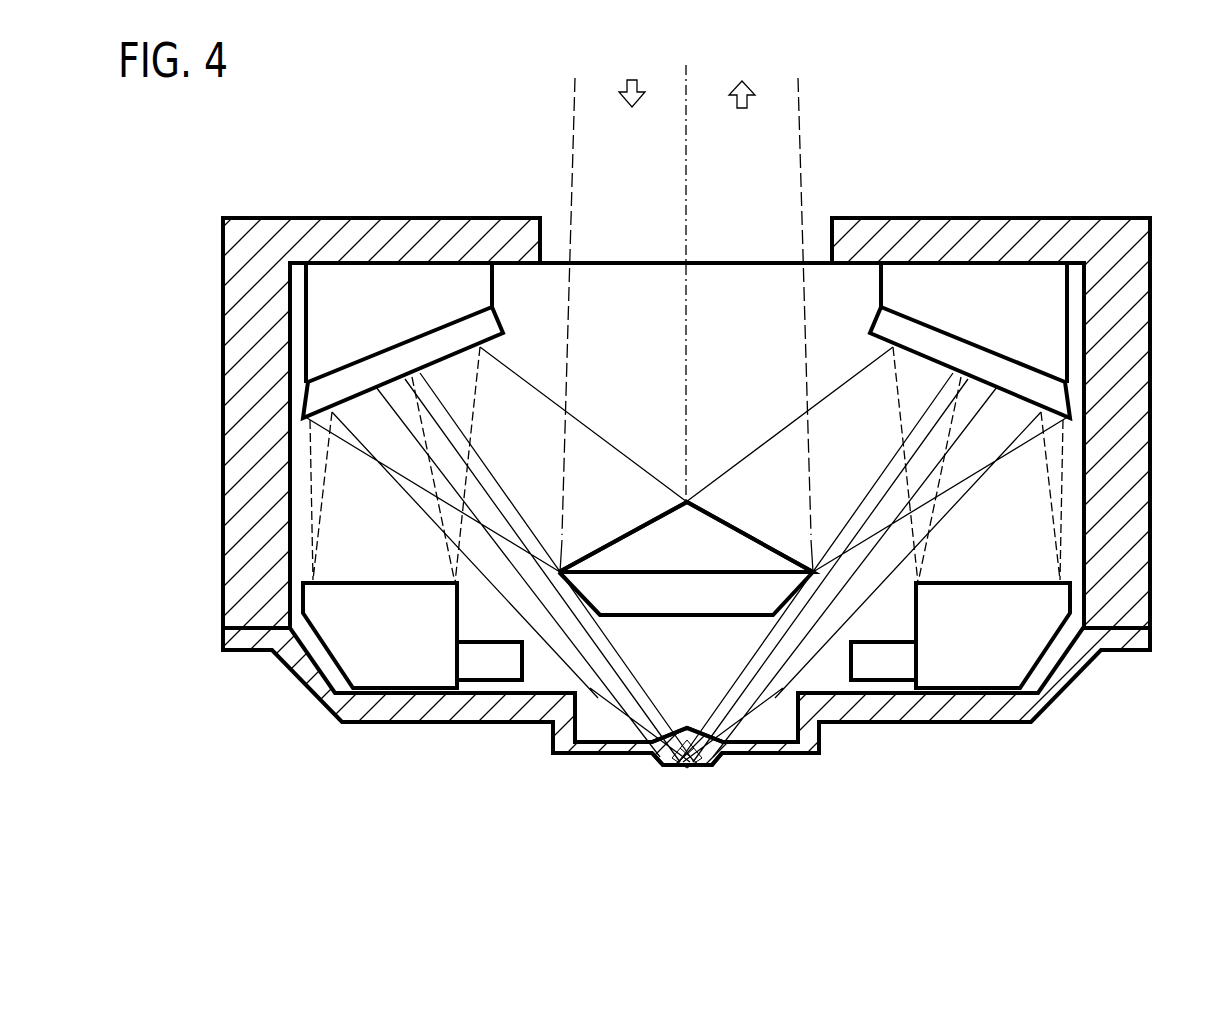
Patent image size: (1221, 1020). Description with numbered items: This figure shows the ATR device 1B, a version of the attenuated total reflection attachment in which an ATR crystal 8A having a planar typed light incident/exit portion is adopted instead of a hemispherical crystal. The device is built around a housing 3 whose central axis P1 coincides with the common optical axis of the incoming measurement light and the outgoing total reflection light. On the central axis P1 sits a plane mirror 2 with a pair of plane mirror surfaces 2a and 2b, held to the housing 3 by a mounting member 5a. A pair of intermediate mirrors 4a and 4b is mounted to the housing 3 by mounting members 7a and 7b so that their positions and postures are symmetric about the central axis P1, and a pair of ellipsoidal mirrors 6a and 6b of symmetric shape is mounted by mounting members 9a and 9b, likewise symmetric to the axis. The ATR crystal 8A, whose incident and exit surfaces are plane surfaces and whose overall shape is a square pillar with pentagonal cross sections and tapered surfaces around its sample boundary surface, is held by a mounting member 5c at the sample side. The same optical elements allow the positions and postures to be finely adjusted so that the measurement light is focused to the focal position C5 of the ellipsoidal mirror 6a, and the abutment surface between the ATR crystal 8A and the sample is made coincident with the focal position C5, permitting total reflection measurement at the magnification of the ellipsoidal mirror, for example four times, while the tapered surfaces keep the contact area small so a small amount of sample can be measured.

The ATR device 1B is at (215, 165).
The plane mirror 2 is at (686, 517).
The plane mirror surface 2a is at (620, 525).
The plane mirror surface 2b is at (752, 527).
The housing 3 is at (1152, 408).
The intermediate mirror 4a is at (402, 362).
The intermediate mirror 4b is at (942, 350).
The mounting member 5a is at (718, 597).
The mounting member 5c is at (947, 724).
The ellipsoidal mirror 6a is at (340, 625).
The ellipsoidal mirror 6b is at (1027, 622).
The mounting member 7a is at (425, 283).
The mounting member 7b is at (1008, 290).
The ATR crystal 8A is at (668, 768).
The mounting member 9a is at (487, 663).
The mounting member 9b is at (880, 663).
The focal position C5 is at (688, 778).
The central axis P1 is at (686, 83).